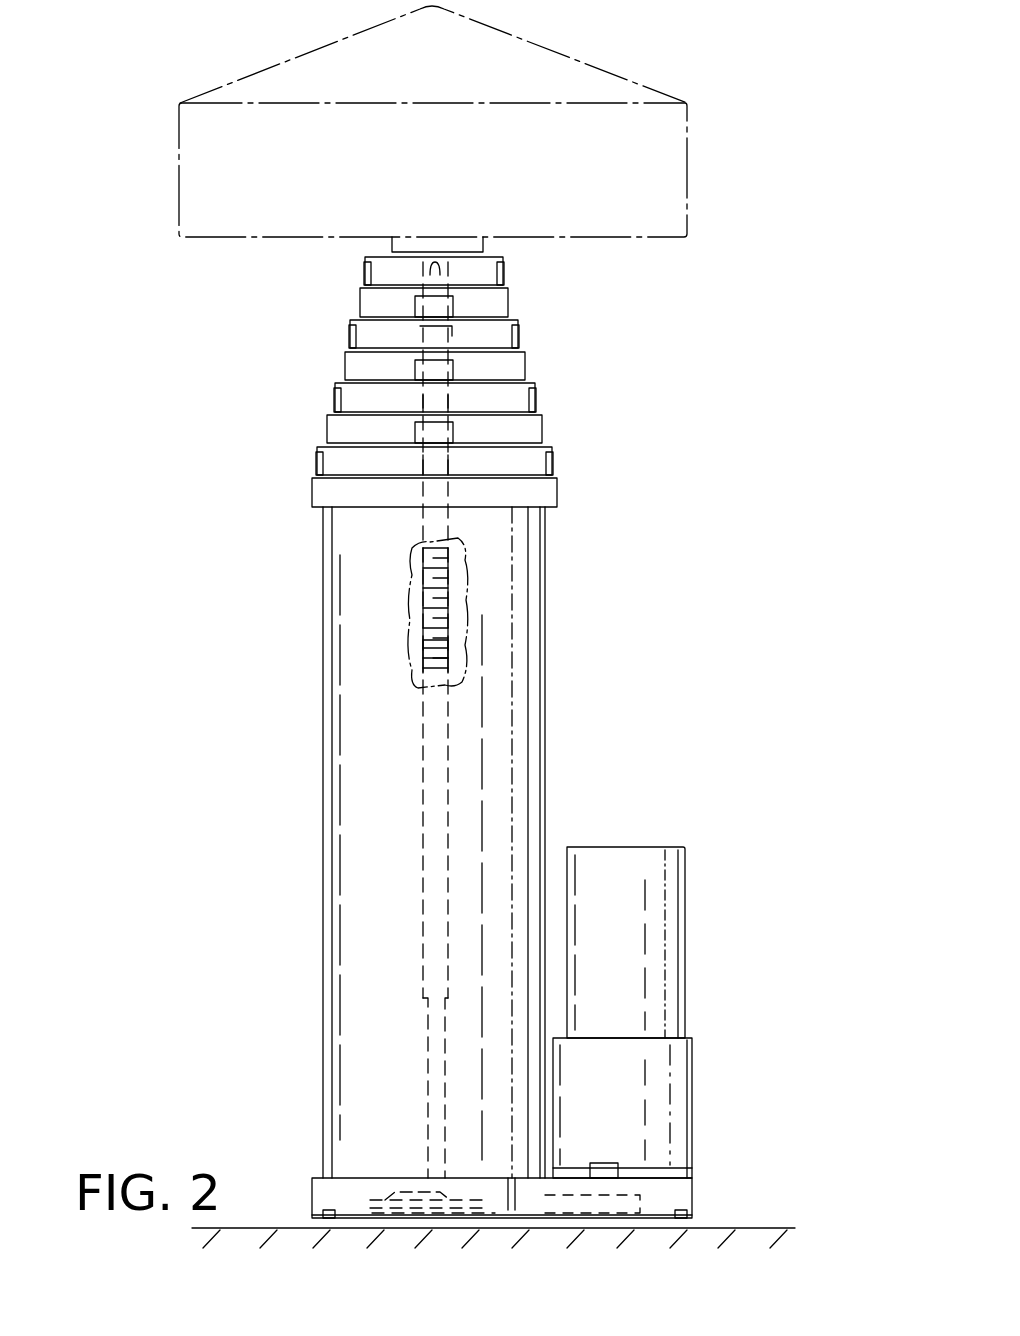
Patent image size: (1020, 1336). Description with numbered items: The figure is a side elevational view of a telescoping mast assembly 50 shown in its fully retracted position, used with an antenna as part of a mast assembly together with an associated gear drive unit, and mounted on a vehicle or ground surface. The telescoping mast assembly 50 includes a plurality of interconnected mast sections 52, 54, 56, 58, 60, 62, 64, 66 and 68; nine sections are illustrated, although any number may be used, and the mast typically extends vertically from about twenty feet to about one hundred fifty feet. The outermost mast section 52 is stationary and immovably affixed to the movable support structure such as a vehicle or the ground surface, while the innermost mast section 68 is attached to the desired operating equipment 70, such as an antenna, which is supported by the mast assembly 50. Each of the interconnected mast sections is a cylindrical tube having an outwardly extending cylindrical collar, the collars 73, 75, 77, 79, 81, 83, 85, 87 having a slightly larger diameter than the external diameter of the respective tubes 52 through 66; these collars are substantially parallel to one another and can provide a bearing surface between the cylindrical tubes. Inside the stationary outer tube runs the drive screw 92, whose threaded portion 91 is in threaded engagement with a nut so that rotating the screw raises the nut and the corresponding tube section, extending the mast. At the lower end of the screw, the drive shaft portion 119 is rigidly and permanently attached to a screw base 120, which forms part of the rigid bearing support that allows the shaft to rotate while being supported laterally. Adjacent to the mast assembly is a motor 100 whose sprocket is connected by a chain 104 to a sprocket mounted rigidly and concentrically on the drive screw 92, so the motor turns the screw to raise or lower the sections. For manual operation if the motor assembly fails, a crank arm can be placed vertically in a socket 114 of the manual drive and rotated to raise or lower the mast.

The telescoping mast assembly 50 is at (308, 797).
The mast section 52 is at (312, 695).
The mast section 54 is at (305, 466).
The mast section 56 is at (318, 428).
The mast section 58 is at (326, 395).
The mast section 60 is at (336, 361).
The mast section 62 is at (341, 331).
The mast section 64 is at (350, 297).
The mast section 66 is at (356, 268).
The innermost mast section 68 is at (381, 240).
The operating equipment 70 is at (676, 176).
The cylindrical collar 73 is at (551, 495).
The cylindrical collar 75 is at (547, 461).
The cylindrical collar 77 is at (536, 425).
The cylindrical collar 79 is at (530, 395).
The cylindrical collar 81 is at (522, 365).
The cylindrical collar 83 is at (514, 340).
The cylindrical collar 85 is at (504, 308).
The cylindrical collar 87 is at (496, 275).
The threaded portion 91 is at (442, 600).
The drive screw 92 is at (455, 653).
The motor 100 is at (668, 894).
The chain 104 is at (535, 1205).
The socket 114 is at (607, 1160).
The drive shaft portion 119 is at (430, 1063).
The screw base 120 is at (404, 1181).